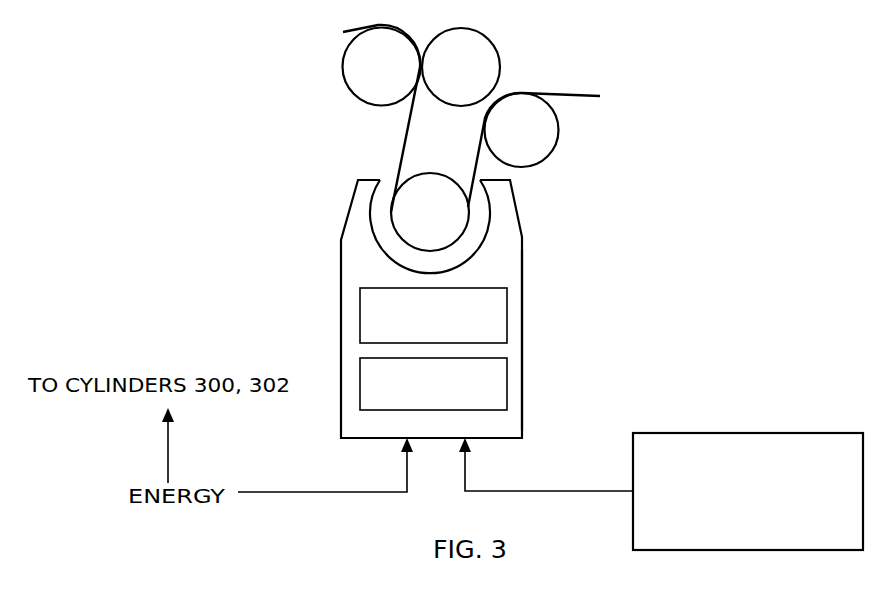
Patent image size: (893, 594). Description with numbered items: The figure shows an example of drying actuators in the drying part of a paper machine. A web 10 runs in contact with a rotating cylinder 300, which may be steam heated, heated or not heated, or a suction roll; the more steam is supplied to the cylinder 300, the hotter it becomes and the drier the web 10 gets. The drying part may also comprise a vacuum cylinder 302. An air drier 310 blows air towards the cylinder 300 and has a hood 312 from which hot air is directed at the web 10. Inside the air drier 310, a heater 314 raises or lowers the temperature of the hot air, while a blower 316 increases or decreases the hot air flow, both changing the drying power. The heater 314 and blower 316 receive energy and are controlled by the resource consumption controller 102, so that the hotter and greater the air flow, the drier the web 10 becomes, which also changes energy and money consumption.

The web 10 is at (567, 93).
The resource consumption controller 102 is at (698, 433).
The cylinder 300 is at (445, 229).
The vacuum cylinder 302 is at (475, 80).
The air drier 310 is at (552, 238).
The hood 312 is at (523, 270).
The heater 314 is at (360, 382).
The blower 316 is at (360, 310).